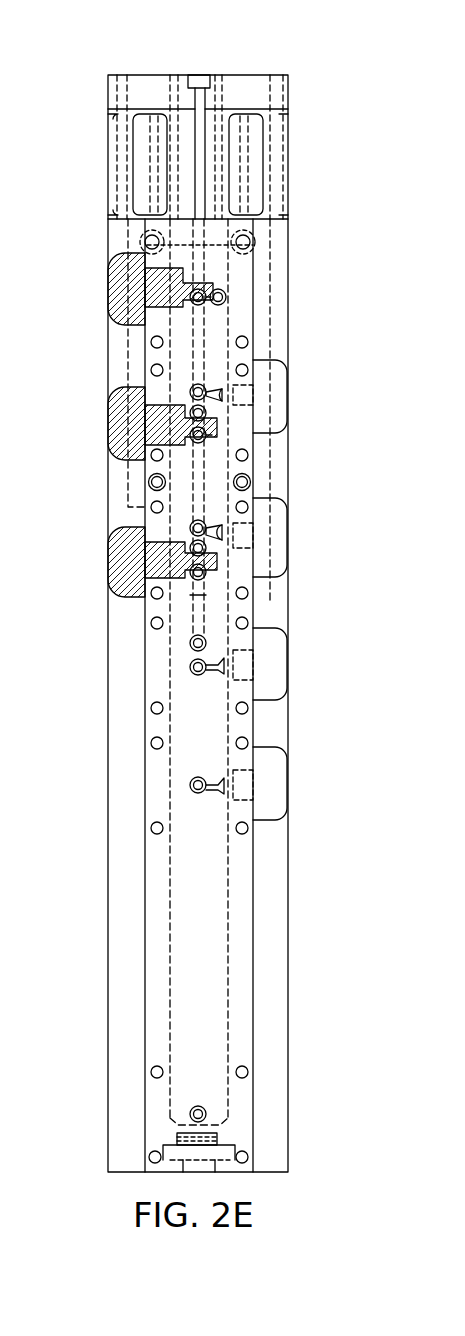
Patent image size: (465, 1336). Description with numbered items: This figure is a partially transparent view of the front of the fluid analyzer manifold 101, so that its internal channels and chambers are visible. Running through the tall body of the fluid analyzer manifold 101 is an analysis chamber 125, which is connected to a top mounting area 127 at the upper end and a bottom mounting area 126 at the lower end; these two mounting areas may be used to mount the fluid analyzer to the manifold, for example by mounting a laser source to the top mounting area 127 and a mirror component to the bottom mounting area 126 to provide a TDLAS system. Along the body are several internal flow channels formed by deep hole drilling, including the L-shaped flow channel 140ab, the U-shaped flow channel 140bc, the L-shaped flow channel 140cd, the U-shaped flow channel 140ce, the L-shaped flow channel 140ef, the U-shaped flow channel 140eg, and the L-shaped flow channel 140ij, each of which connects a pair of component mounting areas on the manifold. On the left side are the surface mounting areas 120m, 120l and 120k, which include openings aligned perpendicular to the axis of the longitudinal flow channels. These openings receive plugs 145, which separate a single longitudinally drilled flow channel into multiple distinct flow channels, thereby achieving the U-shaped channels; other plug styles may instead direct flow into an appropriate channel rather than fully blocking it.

The fluid analyzer manifold 101 is at (332, 40).
The top mounting area 127 is at (120, 89).
The surface mounting area 120m is at (150, 286).
The surface mounting area 120l is at (148, 424).
The surface mounting area 120k is at (150, 560).
The plug 145 is at (217, 273).
The flow channel 140eg is at (200, 330).
The flow channel 140ef is at (238, 395).
The flow channel 140ce is at (205, 470).
The flow channel 140cd is at (238, 535).
The flow channel 140bc is at (195, 600).
The flow channel 140ab is at (196, 665).
The flow channel 140ij is at (196, 785).
The analysis chamber 125 is at (205, 1040).
The bottom mounting area 126 is at (175, 1152).